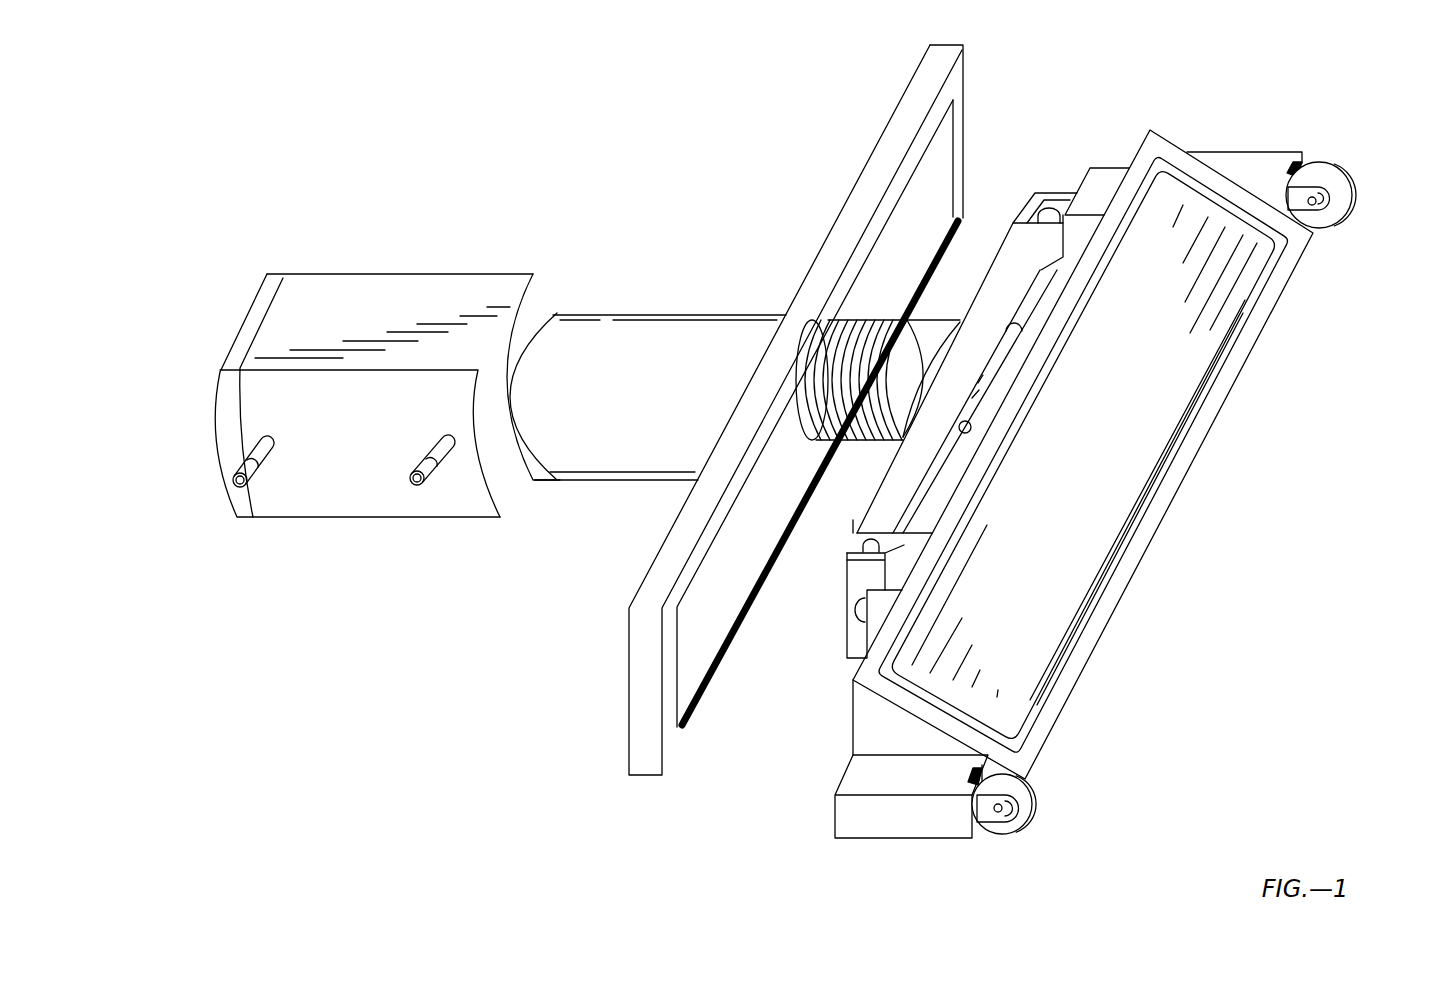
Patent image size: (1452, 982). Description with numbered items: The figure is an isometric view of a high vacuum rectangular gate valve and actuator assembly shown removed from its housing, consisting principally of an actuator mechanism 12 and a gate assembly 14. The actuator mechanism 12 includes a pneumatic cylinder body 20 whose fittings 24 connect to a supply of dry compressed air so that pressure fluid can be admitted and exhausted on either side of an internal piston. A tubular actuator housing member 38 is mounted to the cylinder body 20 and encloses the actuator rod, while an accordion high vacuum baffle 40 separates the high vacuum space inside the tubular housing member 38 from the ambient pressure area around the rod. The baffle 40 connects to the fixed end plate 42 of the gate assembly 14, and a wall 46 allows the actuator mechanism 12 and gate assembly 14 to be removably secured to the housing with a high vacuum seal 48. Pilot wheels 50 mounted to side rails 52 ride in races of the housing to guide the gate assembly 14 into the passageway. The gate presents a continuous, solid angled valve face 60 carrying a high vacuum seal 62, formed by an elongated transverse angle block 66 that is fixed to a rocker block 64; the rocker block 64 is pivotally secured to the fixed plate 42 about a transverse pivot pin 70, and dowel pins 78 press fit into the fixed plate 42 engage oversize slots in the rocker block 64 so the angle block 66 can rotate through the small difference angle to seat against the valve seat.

The actuator mechanism 12 is at (288, 574).
The gate assembly 14 is at (793, 862).
The pneumatic cylinder body 20 is at (383, 295).
The fittings 24 is at (240, 480).
The tubular actuator housing member 38 is at (675, 350).
The accordion high vacuum baffle 40 is at (922, 330).
The fixed end plate 42 is at (1022, 247).
The wall 46 is at (660, 568).
The high vacuum seal 48 is at (700, 702).
The pilot wheels 50 is at (1345, 176).
The side rails 52 is at (902, 823).
The angled valve face 60 is at (1167, 143).
The high vacuum seal 62 is at (1232, 342).
The rocker block 64 is at (1108, 178).
The elongated transverse angle block 66 is at (870, 726).
The transverse pivot pin 70 is at (1010, 352).
The dowel pins 78 is at (862, 537).